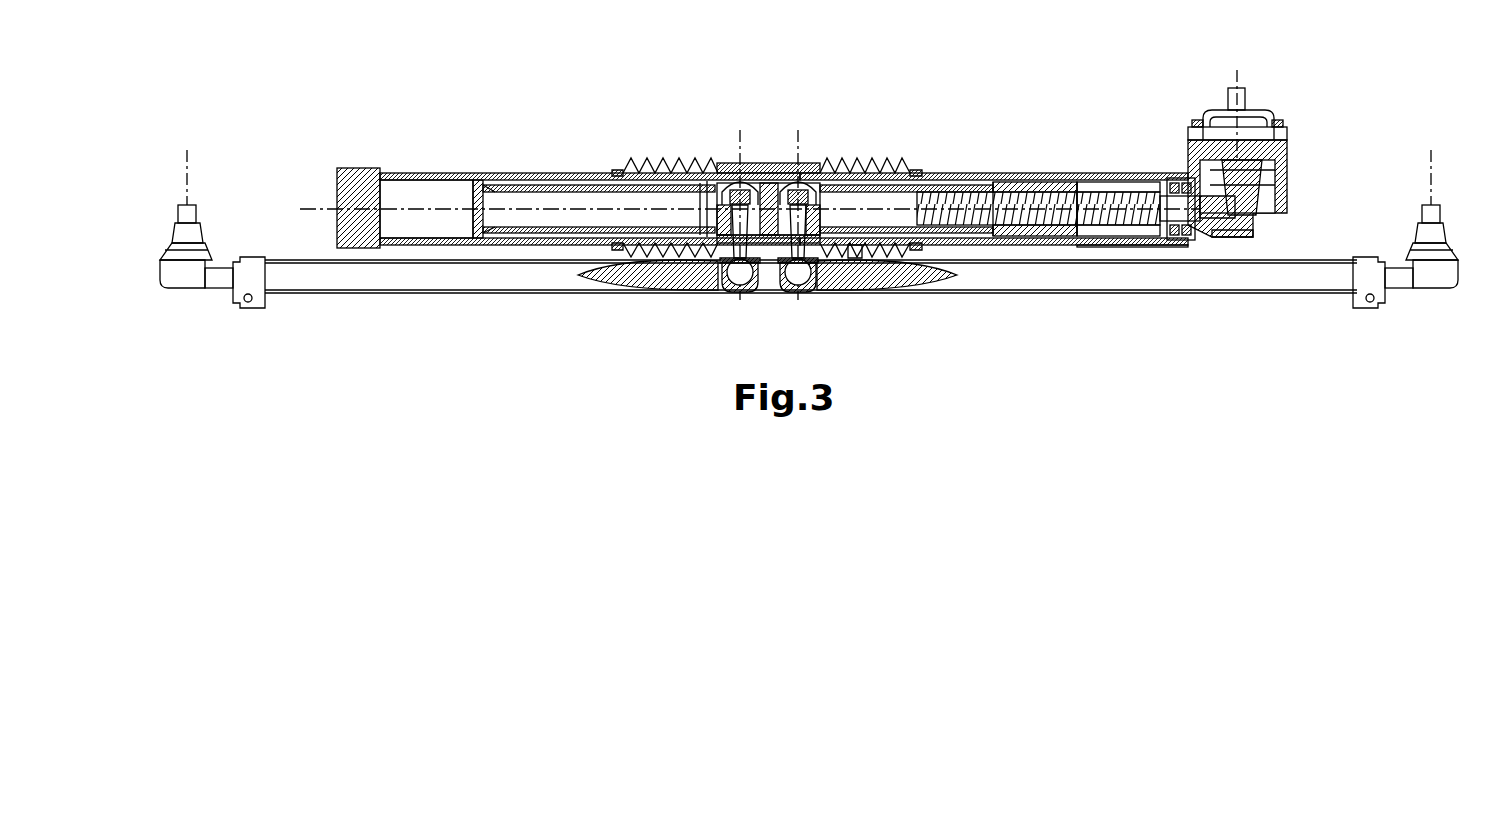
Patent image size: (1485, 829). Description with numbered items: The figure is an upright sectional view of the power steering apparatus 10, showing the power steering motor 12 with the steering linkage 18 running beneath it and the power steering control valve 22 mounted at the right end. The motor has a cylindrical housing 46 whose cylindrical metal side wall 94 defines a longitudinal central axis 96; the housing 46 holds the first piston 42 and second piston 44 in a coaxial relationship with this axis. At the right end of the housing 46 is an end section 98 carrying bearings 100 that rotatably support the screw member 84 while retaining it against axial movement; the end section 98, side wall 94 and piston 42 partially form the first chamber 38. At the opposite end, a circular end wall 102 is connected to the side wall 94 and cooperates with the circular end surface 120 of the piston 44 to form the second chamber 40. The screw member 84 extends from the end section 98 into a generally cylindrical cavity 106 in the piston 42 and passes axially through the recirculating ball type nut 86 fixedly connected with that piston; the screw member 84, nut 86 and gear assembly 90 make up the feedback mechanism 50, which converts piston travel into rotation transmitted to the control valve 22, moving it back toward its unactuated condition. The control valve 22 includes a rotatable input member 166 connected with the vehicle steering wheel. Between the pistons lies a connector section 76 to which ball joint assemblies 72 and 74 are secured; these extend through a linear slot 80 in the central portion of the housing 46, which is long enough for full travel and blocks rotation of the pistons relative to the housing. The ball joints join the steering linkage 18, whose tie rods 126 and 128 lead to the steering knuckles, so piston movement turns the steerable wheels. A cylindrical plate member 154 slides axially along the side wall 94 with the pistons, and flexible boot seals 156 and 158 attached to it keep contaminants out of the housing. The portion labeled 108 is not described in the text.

The power steering apparatus 10 is at (958, 74).
The power steering motor 12 is at (731, 158).
The steering linkage 18 is at (607, 297).
The power steering control valve 22 is at (1263, 188).
The first chamber 38 is at (1130, 185).
The second chamber 40 is at (430, 190).
The first piston 42 is at (990, 175).
The second piston 44 is at (553, 188).
The housing 46 is at (395, 171).
The feedback mechanism 50 is at (1103, 191).
The ball joint assembly 72 is at (803, 295).
The ball joint assembly 74 is at (735, 291).
The connector section 76 is at (772, 165).
The linear slot 80 is at (856, 292).
The screw member 84 is at (1135, 226).
The nut 86 is at (1060, 184).
The gear assembly 90 is at (1285, 183).
The side wall 94 is at (1090, 247).
The longitudinal central axis 96 is at (302, 205).
The end section 98 is at (1205, 240).
The bearings 100 is at (1178, 178).
The circular end wall 102 is at (337, 178).
The cylindrical cavity 106 is at (896, 198).
The rack tooth portion 108 is at (897, 288).
The circular end surface 120 is at (465, 215).
The tie rod 126 is at (1312, 272).
The tie rod 128 is at (246, 239).
The plate member 154 is at (745, 163).
The flexible boot seal 156 is at (858, 160).
The flexible boot seal 158 is at (632, 160).
The input member 166 is at (1240, 90).